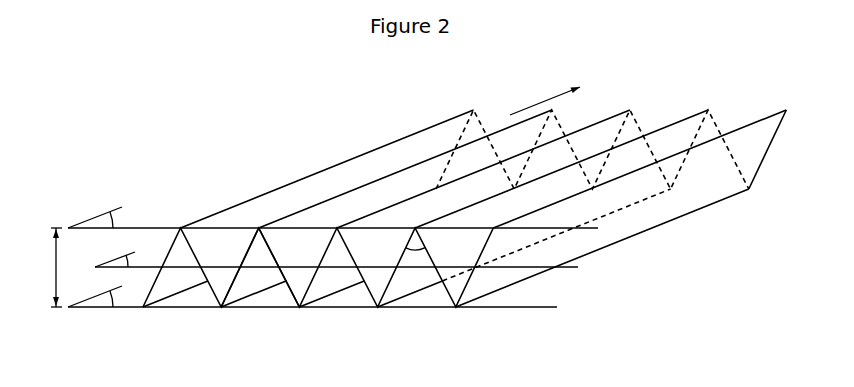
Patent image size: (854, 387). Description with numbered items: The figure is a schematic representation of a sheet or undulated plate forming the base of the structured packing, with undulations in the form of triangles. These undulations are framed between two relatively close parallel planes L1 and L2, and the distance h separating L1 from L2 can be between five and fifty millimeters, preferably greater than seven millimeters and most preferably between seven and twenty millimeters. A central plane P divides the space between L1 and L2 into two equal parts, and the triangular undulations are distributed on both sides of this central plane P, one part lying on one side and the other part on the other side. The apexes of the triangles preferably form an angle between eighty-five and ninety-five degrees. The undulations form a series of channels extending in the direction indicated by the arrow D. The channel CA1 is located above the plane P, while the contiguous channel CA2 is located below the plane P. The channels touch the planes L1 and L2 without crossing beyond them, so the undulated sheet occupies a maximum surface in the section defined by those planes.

The parallel plane L1 is at (312, 293).
The parallel plane L2 is at (333, 212).
The central plane P is at (336, 257).
The distance h is at (48, 267).
The direction arrow D is at (545, 98).
The channel CA1 is at (228, 257).
The channel CA2 is at (275, 290).